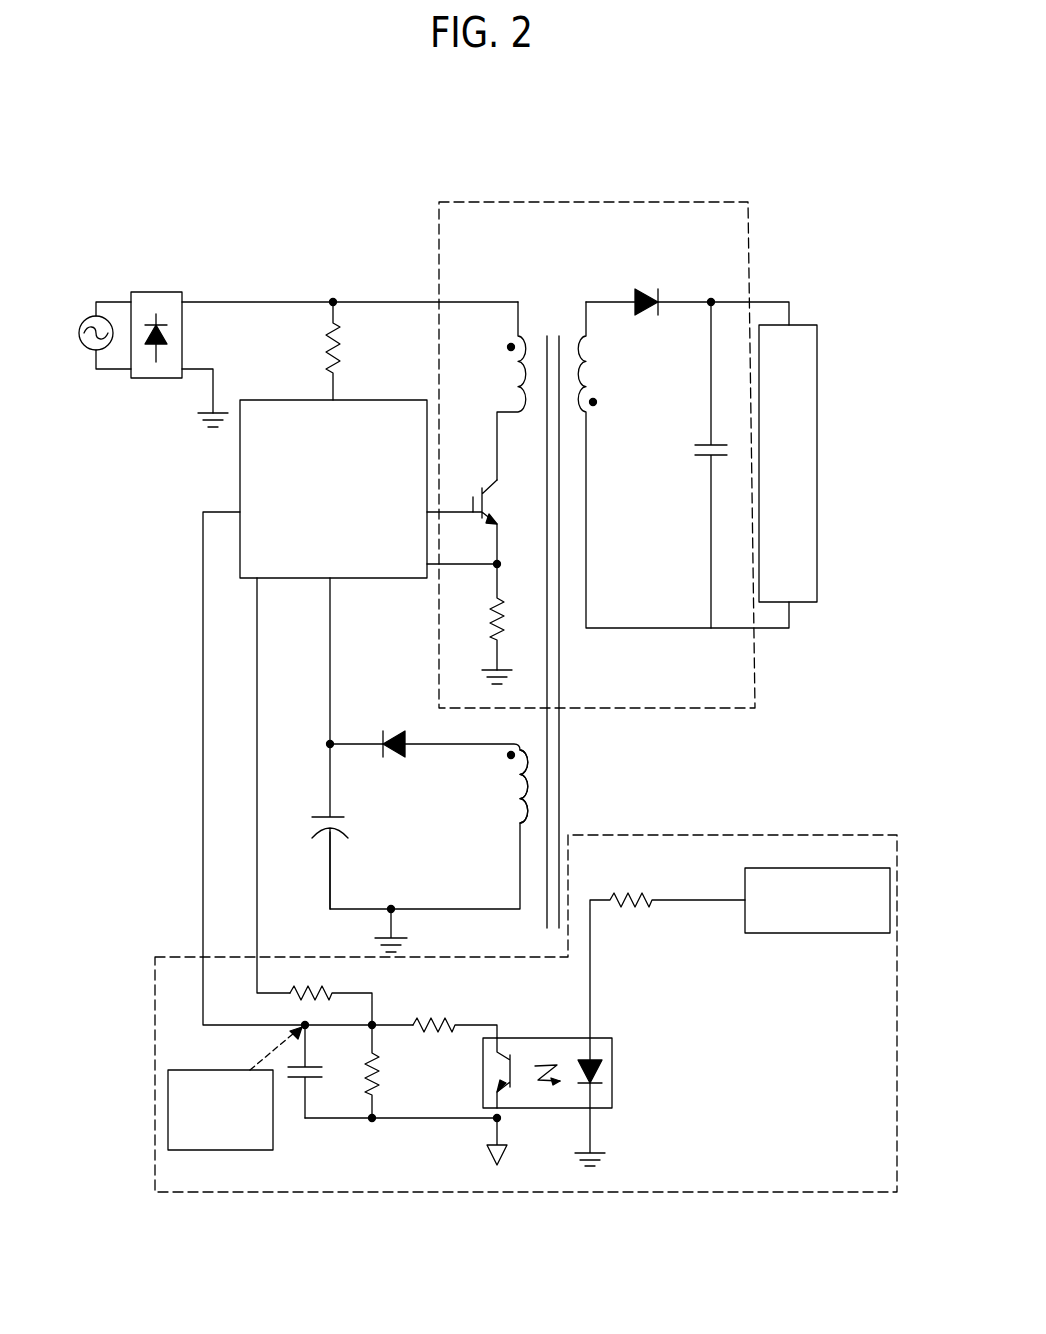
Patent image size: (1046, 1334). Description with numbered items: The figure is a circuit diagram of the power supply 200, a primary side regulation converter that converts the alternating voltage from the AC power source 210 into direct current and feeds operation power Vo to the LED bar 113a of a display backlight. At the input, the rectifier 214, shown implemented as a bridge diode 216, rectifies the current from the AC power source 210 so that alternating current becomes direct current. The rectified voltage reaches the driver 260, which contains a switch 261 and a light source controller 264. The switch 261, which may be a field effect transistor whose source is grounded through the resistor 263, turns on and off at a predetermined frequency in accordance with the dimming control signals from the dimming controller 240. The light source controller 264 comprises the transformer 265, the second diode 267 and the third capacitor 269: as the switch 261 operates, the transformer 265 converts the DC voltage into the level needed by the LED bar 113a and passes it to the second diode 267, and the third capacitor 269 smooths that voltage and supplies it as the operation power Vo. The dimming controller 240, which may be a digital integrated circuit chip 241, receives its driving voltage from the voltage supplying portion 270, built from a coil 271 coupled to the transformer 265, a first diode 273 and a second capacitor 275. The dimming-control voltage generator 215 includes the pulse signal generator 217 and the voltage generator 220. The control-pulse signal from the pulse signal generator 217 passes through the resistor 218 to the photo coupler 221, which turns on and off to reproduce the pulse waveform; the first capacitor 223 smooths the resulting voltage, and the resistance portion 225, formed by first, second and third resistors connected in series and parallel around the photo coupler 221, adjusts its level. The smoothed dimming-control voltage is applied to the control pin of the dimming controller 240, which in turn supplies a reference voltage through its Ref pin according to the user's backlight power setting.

The power supply 200 is at (328, 185).
The AC power source 210 is at (88, 316).
The rectifier 214 is at (175, 290).
The bridge diode 216 is at (155, 291).
The dimming controller 240 is at (240, 485).
The digital integrated circuit chip 241 is at (240, 456).
The driver 260 is at (683, 712).
The switch 261 is at (479, 487).
The resistor 263 is at (487, 622).
The light source controller 264 is at (593, 297).
The transformer 265 is at (586, 371).
The second diode 267 is at (643, 289).
The third capacitor 269 is at (693, 449).
The LED bar 113a is at (818, 322).
The voltage supplying portion 270 is at (304, 853).
The coil 271 is at (518, 788).
The first diode 273 is at (397, 735).
The second capacitor 275 is at (311, 816).
The dimming-control voltage generator 215 is at (870, 834).
The pulse signal generator 217 is at (810, 934).
The resistor 218 is at (633, 914).
The voltage generator 220 is at (637, 1015).
The photo coupler 221 is at (612, 1070).
The first capacitor 223 is at (297, 1086).
The resistance portion 225 is at (402, 1091).